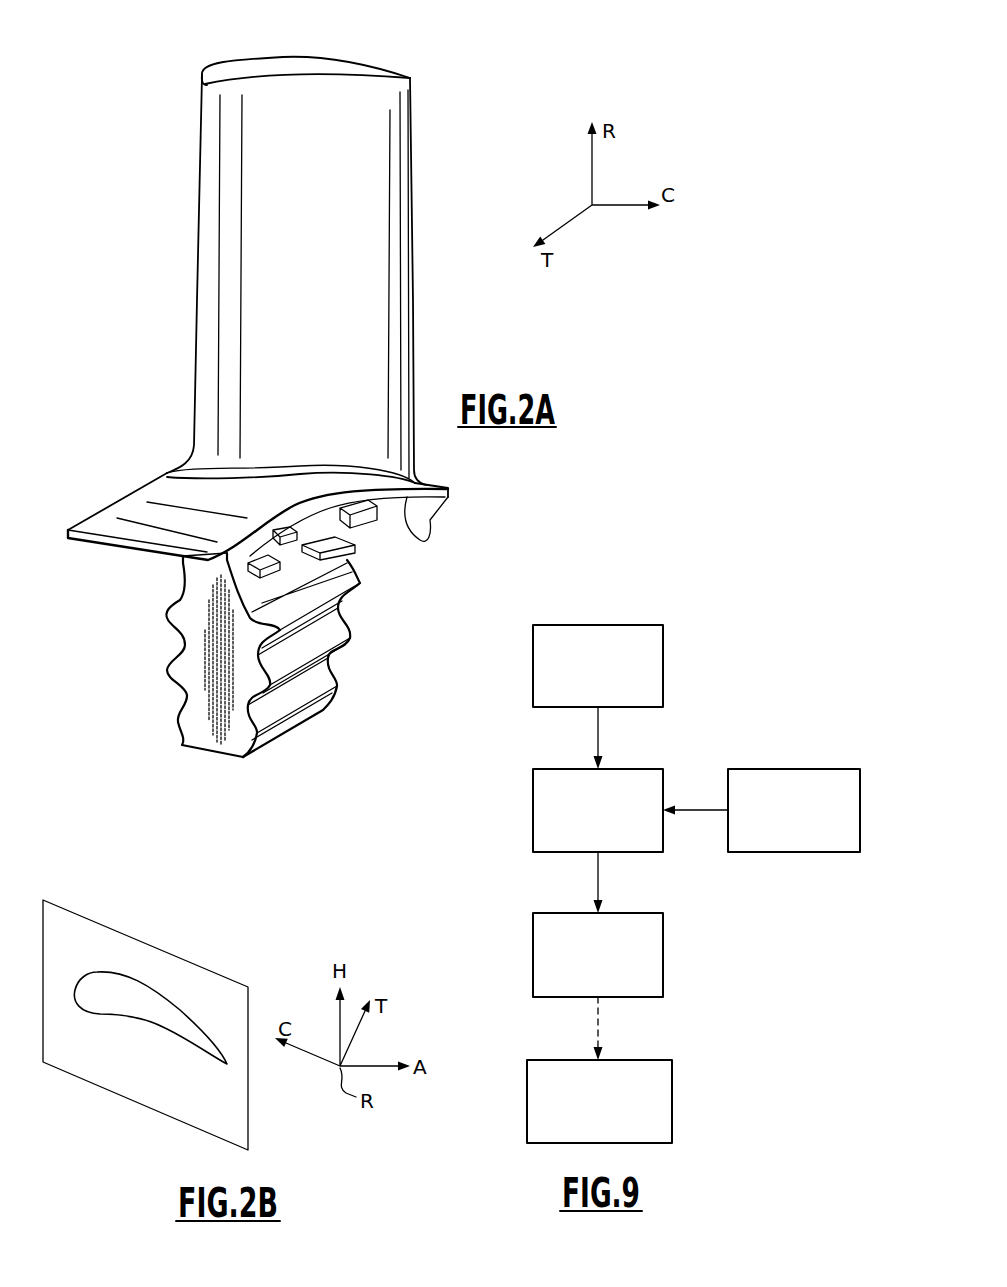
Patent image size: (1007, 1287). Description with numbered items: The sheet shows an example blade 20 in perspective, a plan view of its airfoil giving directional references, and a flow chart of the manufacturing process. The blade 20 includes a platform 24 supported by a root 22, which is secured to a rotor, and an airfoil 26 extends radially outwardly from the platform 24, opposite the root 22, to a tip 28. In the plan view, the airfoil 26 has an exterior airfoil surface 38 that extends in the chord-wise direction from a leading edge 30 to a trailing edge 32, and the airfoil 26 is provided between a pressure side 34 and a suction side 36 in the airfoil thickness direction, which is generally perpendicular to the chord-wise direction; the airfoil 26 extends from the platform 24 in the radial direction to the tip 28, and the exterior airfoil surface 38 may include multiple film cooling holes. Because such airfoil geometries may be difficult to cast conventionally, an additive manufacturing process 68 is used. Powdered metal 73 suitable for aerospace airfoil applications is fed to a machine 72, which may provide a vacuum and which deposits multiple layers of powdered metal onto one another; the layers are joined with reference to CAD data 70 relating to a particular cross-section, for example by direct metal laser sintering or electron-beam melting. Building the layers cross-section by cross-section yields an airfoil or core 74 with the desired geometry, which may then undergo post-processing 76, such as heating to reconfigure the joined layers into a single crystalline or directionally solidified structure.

In FIG. 2A, the blade 20 is at (160, 225).
In FIG. 2A, the root 22 is at (200, 660).
In FIG. 2A, the platform 24 is at (313, 483).
In FIG. 2B, the platform 24 is at (96, 922).
In FIG. 2A, the airfoil 26 is at (362, 367).
In FIG. 2B, the airfoil 26 is at (157, 972).
In FIG. 2A, the tip 28 is at (220, 62).
In FIG. 2A, the leading edge 30 is at (198, 228).
In FIG. 2A, the trailing edge 32 is at (413, 220).
In FIG. 2A, the pressure side 34 is at (309, 279).
In FIG. 2A, the suction side 36 is at (340, 42).
In FIG. 2A, the exterior airfoil surface 38 is at (426, 84).
In FIG. 9, the additive manufacturing process 68 is at (499, 729).
In FIG. 9, the CAD data 70 is at (640, 623).
In FIG. 9, the machine 72 is at (640, 769).
In FIG. 9, the powdered metal 73 is at (825, 769).
In FIG. 9, the airfoil or core 74 is at (640, 913).
In FIG. 9, the post-processing 76 is at (648, 1060).